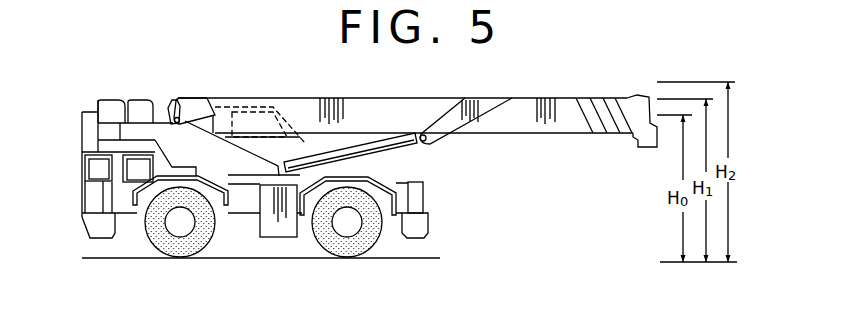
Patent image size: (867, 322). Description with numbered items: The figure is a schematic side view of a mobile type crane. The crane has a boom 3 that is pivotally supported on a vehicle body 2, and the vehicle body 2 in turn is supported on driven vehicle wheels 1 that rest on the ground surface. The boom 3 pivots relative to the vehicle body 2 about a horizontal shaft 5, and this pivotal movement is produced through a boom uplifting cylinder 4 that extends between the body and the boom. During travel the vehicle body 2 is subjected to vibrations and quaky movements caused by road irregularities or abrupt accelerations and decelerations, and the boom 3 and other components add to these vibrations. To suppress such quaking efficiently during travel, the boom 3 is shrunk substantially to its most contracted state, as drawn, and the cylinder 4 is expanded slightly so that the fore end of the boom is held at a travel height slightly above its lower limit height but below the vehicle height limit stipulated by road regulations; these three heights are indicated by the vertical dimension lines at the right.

The wheels 1 is at (181, 245).
The vehicle body 2 is at (429, 199).
The boom 3 is at (415, 118).
The boom uplifting cylinder 4 is at (395, 149).
The horizontal shaft 5 is at (177, 116).